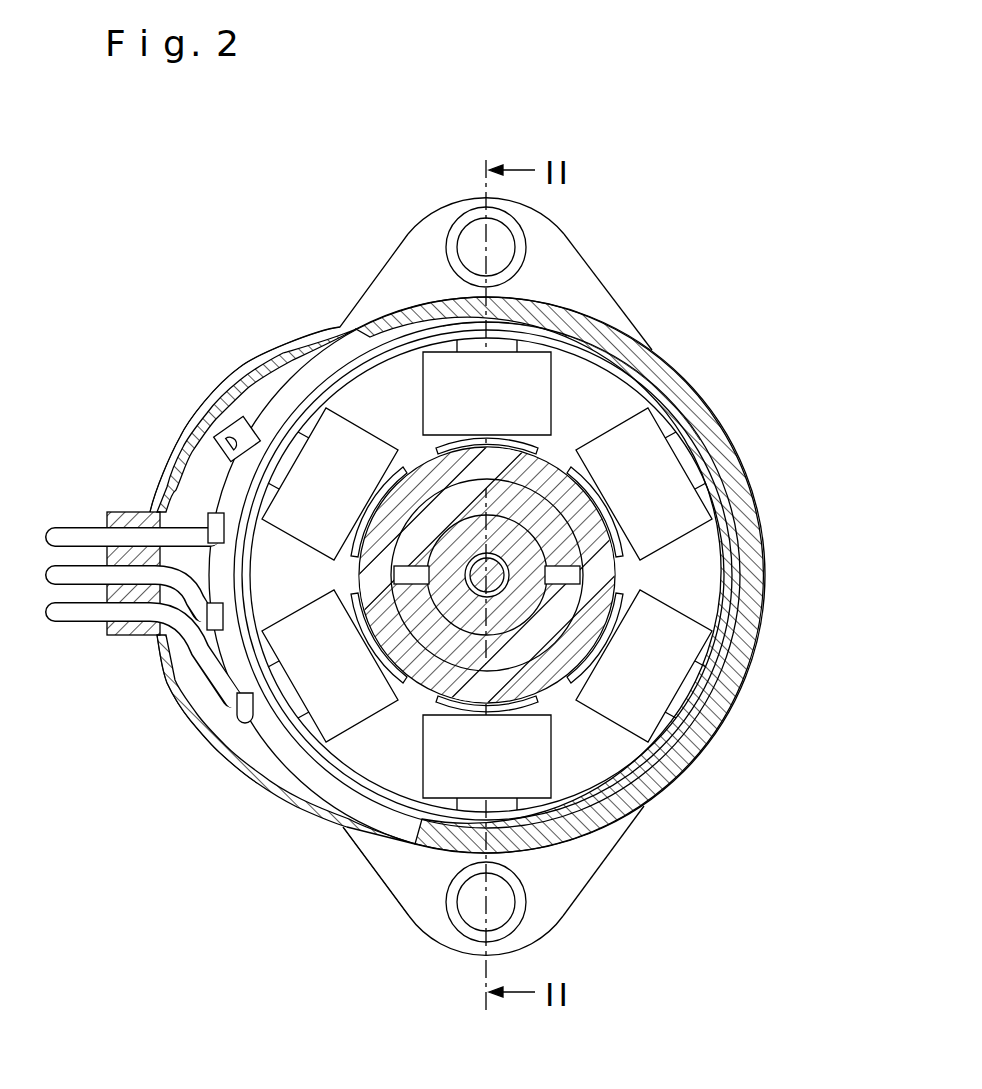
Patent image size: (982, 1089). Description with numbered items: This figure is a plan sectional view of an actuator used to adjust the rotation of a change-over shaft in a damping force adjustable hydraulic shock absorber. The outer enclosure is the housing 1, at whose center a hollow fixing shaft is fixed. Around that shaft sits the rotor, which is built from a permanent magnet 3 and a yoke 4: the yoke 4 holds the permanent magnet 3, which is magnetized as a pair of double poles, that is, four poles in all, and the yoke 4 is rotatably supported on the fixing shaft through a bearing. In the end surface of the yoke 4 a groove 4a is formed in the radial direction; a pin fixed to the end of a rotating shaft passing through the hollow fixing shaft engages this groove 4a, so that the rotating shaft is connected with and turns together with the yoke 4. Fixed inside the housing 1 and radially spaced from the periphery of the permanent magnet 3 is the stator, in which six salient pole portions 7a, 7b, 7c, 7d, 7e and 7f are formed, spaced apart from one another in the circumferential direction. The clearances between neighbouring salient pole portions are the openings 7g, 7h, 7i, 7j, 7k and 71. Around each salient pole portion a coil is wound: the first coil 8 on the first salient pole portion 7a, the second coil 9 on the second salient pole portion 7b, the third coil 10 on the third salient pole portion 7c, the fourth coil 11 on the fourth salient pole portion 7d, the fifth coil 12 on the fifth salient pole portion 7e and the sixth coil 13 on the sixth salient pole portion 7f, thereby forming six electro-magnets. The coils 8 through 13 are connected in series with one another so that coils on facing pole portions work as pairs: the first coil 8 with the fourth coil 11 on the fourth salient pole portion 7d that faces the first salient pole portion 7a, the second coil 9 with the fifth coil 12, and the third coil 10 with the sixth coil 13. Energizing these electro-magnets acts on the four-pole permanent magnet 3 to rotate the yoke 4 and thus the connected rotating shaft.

The housing 1 is at (560, 917).
The permanent magnet 3 is at (600, 580).
The yoke 4 is at (672, 400).
The groove 4a is at (195, 662).
The first salient pole portion 7a is at (668, 475).
The second salient pole portion 7b is at (625, 617).
The third salient pole portion 7c is at (560, 732).
The fourth salient pole portion 7d is at (227, 677).
The fifth salient pole portion 7e is at (228, 388).
The sixth salient pole portion 7f is at (513, 437).
The opening 7g is at (625, 568).
The opening 7h is at (600, 714).
The opening 7i is at (325, 745).
The opening 7j is at (290, 555).
The opening 7k is at (420, 453).
The opening 71 is at (553, 447).
The first coil 8 is at (740, 450).
The second coil 9 is at (667, 673).
The third coil 10 is at (405, 842).
The fourth coil 11 is at (226, 764).
The fifth coil 12 is at (180, 435).
The sixth coil 13 is at (433, 367).